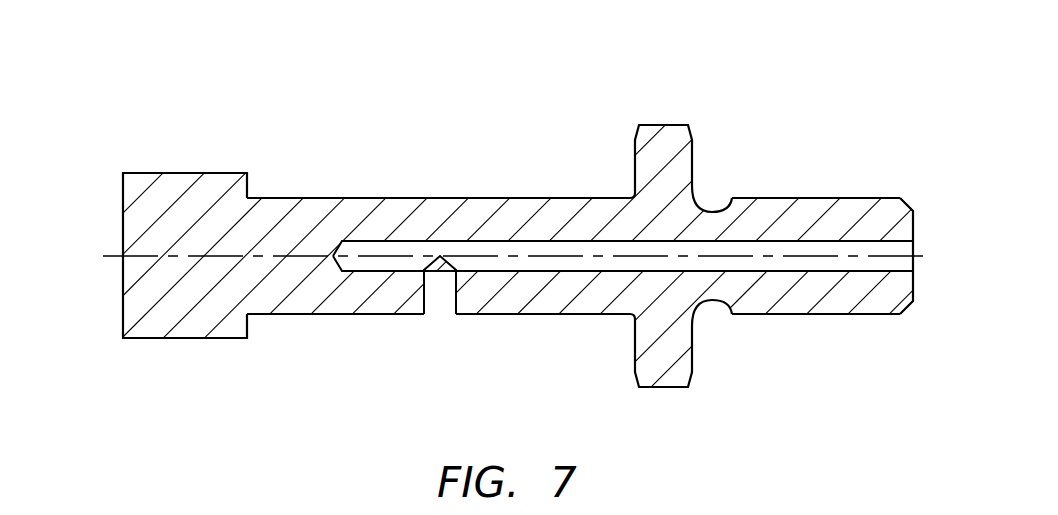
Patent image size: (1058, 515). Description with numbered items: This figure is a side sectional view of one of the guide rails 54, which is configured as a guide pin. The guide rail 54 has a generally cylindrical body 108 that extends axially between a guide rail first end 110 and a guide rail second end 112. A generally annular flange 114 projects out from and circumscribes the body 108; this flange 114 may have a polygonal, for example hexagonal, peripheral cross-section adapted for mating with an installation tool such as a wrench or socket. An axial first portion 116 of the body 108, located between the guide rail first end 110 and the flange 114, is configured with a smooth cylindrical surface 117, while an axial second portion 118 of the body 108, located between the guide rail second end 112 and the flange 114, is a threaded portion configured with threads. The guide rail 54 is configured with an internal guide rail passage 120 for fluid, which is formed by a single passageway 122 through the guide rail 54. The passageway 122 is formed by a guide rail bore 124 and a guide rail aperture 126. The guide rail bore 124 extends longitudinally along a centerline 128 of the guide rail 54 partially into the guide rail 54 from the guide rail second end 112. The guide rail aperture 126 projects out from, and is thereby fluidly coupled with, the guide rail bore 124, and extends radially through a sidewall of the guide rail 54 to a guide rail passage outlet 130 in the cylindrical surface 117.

The guide rail 54 is at (212, 82).
The body 108 is at (322, 190).
The guide rail first end 110 is at (122, 285).
The guide rail second end 112 is at (913, 283).
The flange 114 is at (692, 150).
The axial first portion 116 is at (333, 324).
The cylindrical surface 117 is at (545, 316).
The axial second portion 118 is at (810, 324).
The guide rail passage 120 is at (492, 236).
The passageway 122 is at (623, 263).
The guide rail bore 124 is at (838, 240).
The guide rail aperture 126 is at (432, 298).
The centerline 128 is at (537, 250).
The guide rail passage outlet 130 is at (447, 316).